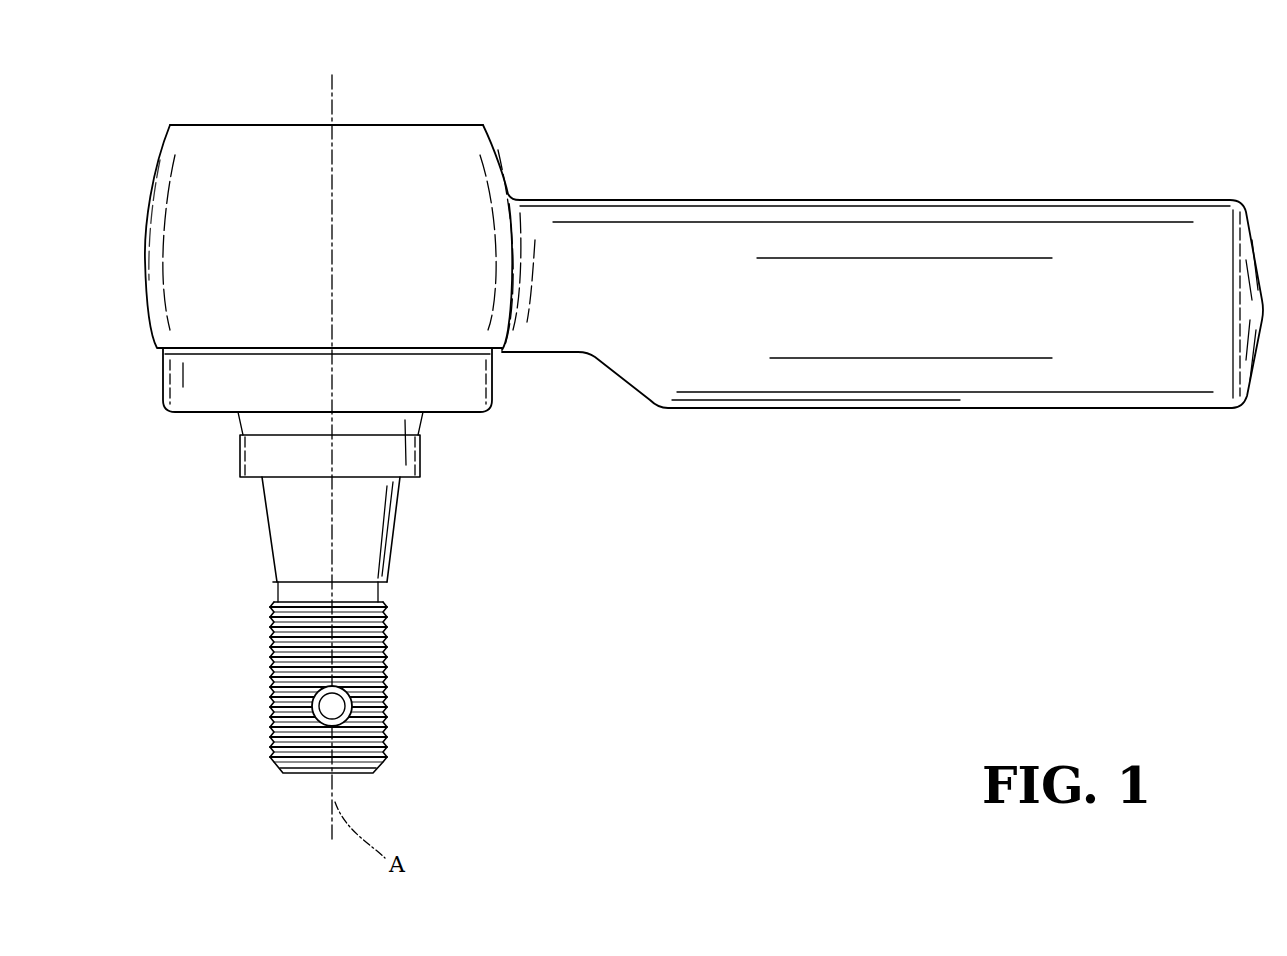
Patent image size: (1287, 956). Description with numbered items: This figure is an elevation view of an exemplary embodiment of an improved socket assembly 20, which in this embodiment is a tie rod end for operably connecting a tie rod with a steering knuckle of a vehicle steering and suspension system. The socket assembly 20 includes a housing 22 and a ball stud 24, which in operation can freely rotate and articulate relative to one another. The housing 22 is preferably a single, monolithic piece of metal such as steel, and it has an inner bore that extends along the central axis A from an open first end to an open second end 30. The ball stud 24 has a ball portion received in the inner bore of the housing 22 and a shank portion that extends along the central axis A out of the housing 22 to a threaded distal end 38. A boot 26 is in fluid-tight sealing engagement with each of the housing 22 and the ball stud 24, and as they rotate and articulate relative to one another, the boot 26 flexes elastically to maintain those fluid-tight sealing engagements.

The socket assembly 20 is at (650, 104).
The housing 22 is at (823, 168).
The open second end 30 is at (453, 125).
The boot 26 is at (222, 463).
The ball stud 24 is at (252, 565).
The threaded distal end 38 is at (387, 704).